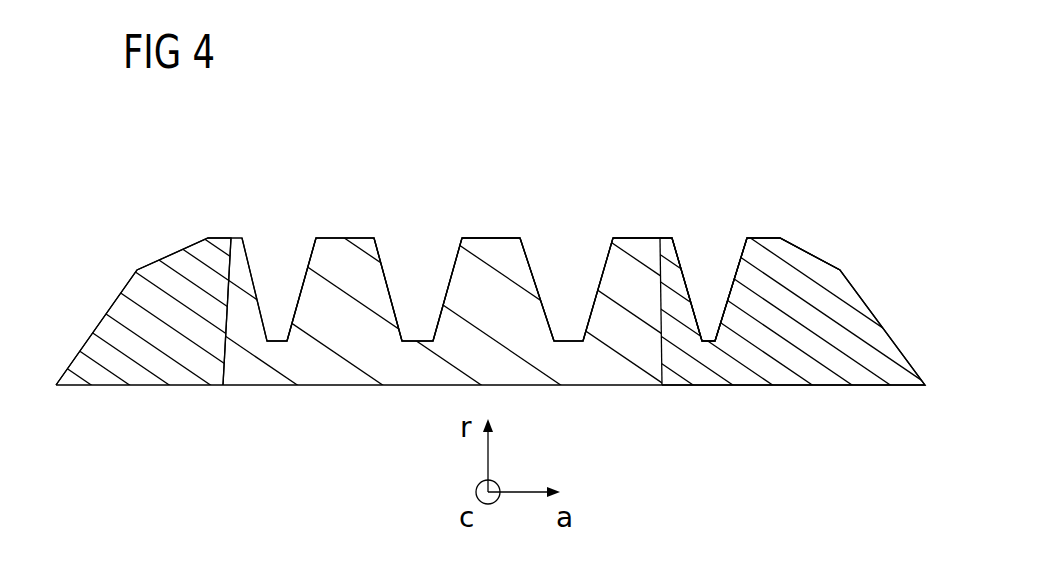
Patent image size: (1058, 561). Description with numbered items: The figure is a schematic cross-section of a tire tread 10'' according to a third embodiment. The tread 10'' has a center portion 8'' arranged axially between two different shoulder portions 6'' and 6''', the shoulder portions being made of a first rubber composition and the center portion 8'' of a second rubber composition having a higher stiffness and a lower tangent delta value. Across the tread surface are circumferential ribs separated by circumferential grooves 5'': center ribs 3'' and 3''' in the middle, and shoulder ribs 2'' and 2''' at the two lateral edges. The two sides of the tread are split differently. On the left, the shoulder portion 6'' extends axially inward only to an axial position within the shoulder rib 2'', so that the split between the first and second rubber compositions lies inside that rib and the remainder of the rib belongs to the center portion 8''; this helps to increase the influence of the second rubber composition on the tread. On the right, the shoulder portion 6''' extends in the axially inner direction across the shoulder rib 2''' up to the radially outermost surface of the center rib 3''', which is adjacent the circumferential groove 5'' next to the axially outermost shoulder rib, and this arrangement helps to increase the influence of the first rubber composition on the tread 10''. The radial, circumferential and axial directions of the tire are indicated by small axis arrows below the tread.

The shoulder rib 2'' is at (529, 280).
The center rib 3'' is at (420, 245).
The circumferential groove 5'' is at (494, 270).
The shoulder portion 6'' is at (529, 330).
The tire tread 10'' is at (485, 186).
The center portion 8'' is at (642, 186).
The center rib 3''' is at (642, 241).
The shoulder portion 6''' is at (777, 237).
The shoulder rib 2''' is at (529, 280).